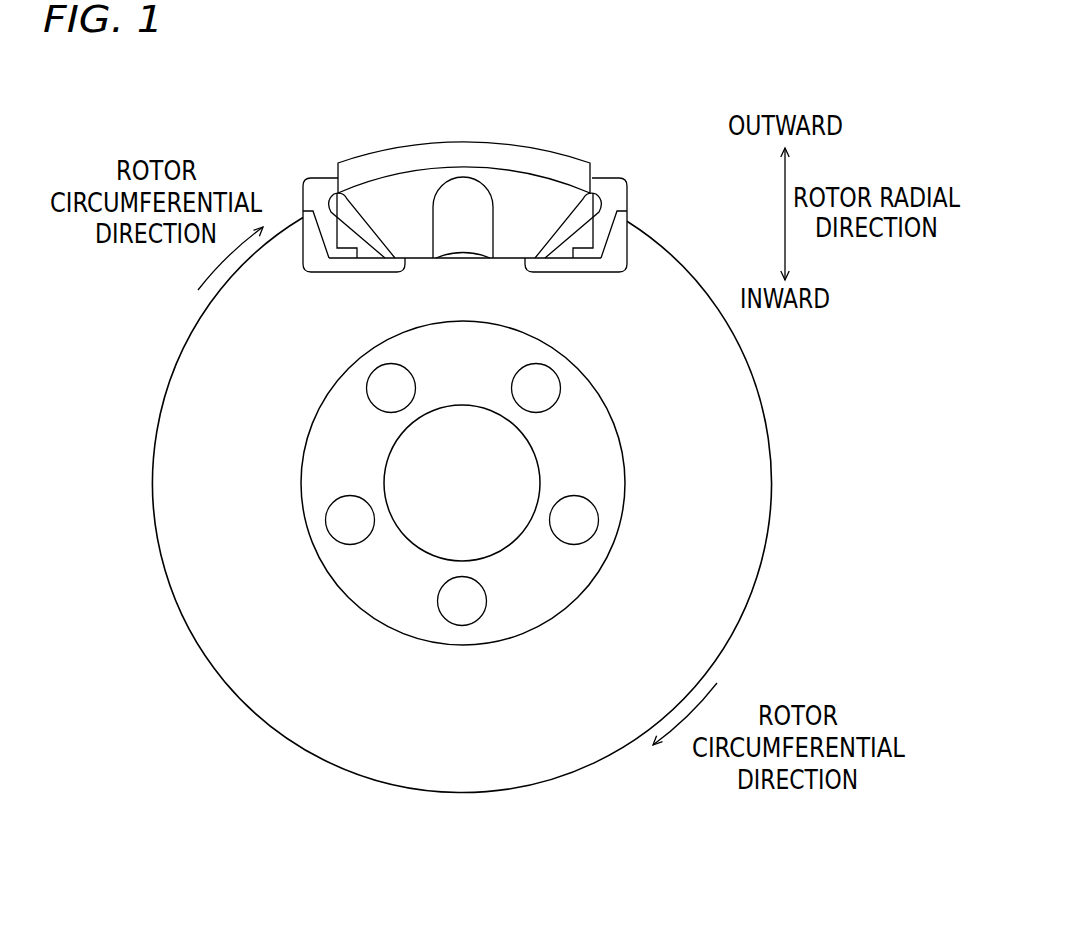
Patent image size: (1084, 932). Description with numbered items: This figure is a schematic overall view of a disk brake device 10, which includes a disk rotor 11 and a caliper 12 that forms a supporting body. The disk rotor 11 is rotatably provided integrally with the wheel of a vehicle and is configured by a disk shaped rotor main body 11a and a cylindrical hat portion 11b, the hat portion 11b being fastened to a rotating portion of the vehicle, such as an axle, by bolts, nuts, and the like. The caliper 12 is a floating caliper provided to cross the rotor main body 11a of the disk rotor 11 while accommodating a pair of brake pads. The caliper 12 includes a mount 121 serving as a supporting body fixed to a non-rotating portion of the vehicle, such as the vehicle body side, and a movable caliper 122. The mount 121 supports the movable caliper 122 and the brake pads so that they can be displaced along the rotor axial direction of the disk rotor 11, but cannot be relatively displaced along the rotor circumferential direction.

The disk brake device 10 is at (243, 137).
The disk rotor 11 is at (168, 347).
The rotor main body 11a is at (160, 480).
The hat portion 11b is at (626, 480).
The caliper 12 is at (615, 107).
The mount 121 is at (331, 192).
The movable caliper 122 is at (543, 151).